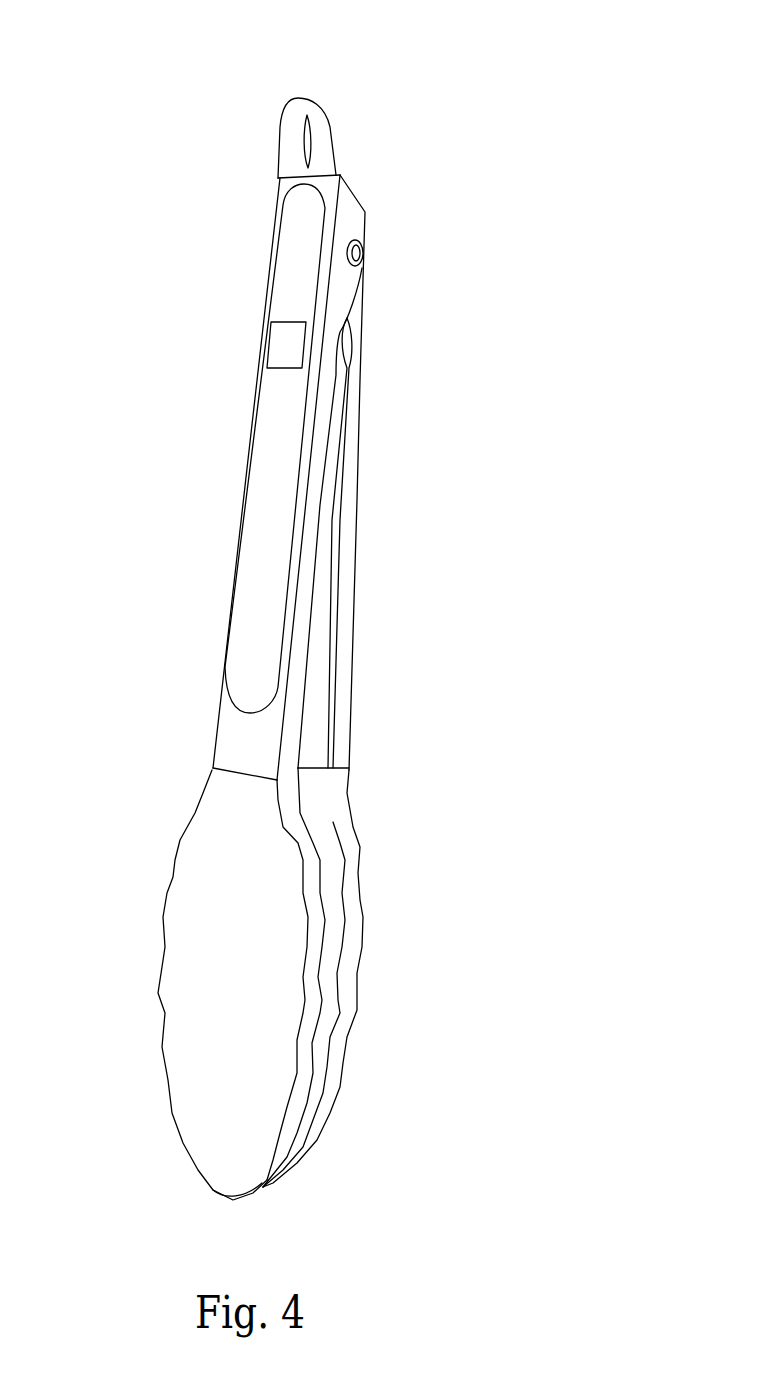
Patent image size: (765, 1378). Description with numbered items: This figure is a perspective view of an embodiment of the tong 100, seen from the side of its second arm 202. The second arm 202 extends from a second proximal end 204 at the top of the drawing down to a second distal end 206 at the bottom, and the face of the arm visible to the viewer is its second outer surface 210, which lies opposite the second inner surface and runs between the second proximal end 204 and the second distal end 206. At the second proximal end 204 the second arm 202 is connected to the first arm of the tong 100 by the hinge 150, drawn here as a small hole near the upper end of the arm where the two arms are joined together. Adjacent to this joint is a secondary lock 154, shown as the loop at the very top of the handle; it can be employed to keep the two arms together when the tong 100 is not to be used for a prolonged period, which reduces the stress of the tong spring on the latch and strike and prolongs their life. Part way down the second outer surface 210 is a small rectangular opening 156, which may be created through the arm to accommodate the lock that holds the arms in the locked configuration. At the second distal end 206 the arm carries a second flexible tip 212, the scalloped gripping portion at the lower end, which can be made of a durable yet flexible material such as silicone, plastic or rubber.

The tong 100 is at (308, 633).
The hinge 150 is at (364, 255).
The secondary lock 154 is at (310, 100).
The opening 156 is at (278, 371).
The second arm 202 is at (264, 420).
The second proximal end 204 is at (213, 420).
The second distal end 206 is at (153, 1160).
The second outer surface 210 is at (258, 567).
The second flexible tip 212 is at (222, 1181).